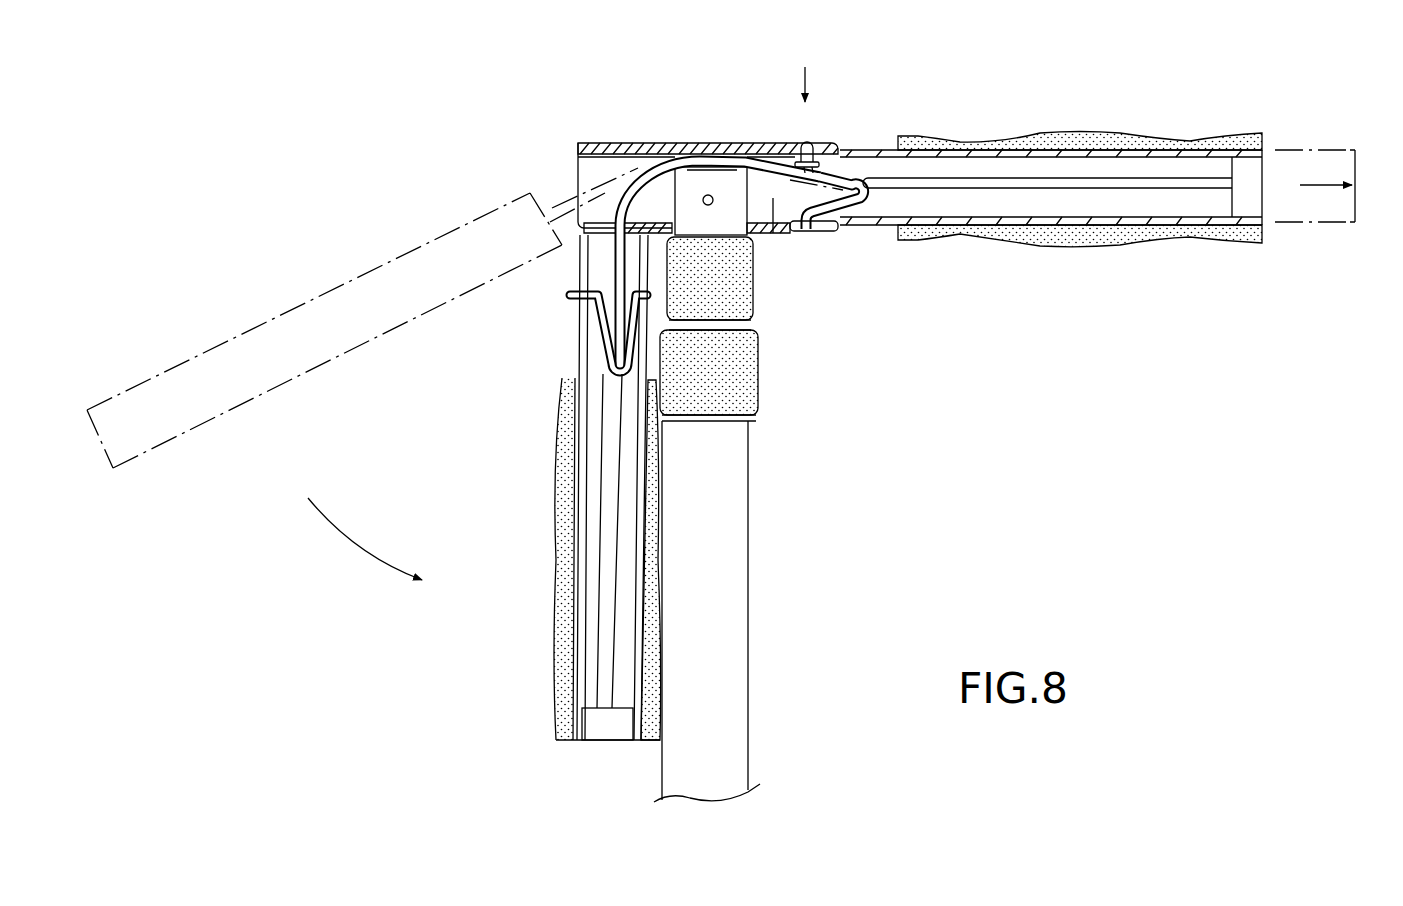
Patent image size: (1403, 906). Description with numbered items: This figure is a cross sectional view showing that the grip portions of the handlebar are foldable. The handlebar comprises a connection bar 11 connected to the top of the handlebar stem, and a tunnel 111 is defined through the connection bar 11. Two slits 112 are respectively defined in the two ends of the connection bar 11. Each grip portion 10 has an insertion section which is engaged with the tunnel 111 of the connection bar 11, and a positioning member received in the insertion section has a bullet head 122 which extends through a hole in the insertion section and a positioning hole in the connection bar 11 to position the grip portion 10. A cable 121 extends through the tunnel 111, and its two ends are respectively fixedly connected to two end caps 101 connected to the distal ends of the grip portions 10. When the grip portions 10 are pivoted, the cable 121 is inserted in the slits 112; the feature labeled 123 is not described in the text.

The grip portion 10 is at (1085, 134).
The end cap 101 is at (1241, 182).
The connection bar 11 is at (671, 143).
The tunnel 111 is at (773, 200).
The slit 112 is at (810, 233).
The cable 121 is at (723, 148).
The bullet head 122 is at (811, 141).
The spring bend 123 is at (858, 202).